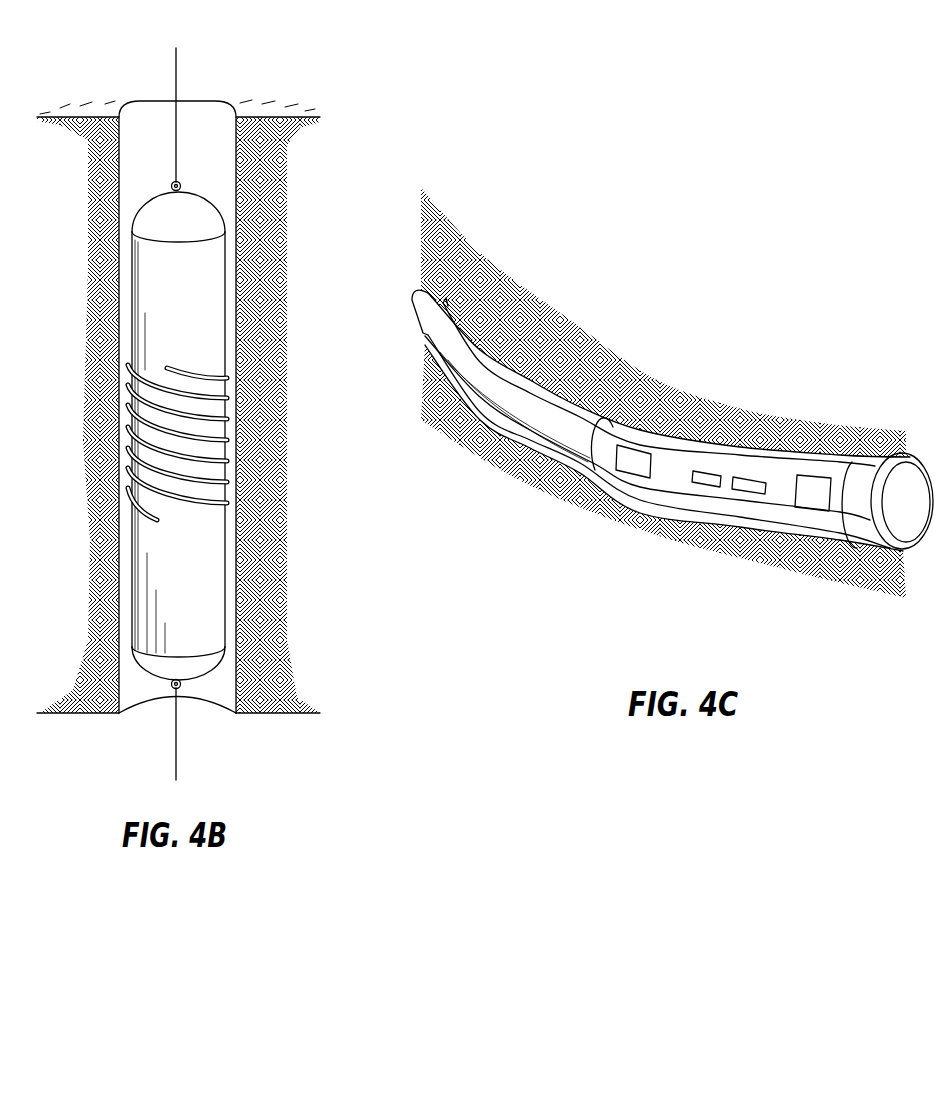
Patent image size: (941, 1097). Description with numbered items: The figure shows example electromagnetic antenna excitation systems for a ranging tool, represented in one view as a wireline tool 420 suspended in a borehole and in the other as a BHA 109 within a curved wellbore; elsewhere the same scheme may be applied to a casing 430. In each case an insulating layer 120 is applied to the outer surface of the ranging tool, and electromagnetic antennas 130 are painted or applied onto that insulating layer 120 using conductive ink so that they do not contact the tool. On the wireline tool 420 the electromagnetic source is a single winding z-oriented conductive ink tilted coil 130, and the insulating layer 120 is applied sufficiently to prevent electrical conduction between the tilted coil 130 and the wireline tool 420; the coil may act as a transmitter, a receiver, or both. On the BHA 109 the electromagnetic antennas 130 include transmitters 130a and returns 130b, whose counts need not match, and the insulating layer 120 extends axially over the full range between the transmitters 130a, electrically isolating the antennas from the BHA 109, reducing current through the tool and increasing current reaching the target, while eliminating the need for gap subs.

In FIG. 4C, the BHA 109 is at (523, 403).
In FIG. 4B, the insulating layer 120 is at (152, 338).
In FIG. 4C, the insulating layer 120 is at (837, 513).
In FIG. 4B, the electromagnetic antenna 130 is at (203, 462).
In FIG. 4C, the transmitter 130a is at (633, 455).
In FIG. 4C, the return 130b is at (707, 473).
In FIG. 4B, the wireline tool 420 is at (176, 83).
In FIG. 4B, the casing 430 is at (135, 720).